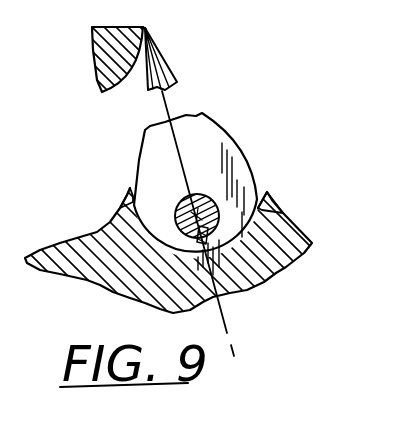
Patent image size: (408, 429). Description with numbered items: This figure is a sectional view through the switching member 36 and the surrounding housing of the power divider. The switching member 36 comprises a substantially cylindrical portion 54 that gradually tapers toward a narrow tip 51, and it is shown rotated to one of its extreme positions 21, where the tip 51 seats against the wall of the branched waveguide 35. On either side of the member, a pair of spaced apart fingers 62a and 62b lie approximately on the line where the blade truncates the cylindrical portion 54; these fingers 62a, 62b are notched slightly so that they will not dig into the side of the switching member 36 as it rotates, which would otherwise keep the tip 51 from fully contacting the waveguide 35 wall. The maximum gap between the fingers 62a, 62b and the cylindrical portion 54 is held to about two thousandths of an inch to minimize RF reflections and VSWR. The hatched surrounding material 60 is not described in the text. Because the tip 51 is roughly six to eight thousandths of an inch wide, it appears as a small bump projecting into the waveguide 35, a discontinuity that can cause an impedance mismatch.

The extreme position 21 is at (146, 28).
The branched waveguide 35 is at (170, 223).
The switching member 36 is at (304, 121).
The tip 51 is at (150, 33).
The cylindrical portion 54 is at (238, 278).
The workpiece material 60 is at (93, 60).
The finger 62a is at (128, 192).
The finger 62b is at (270, 198).